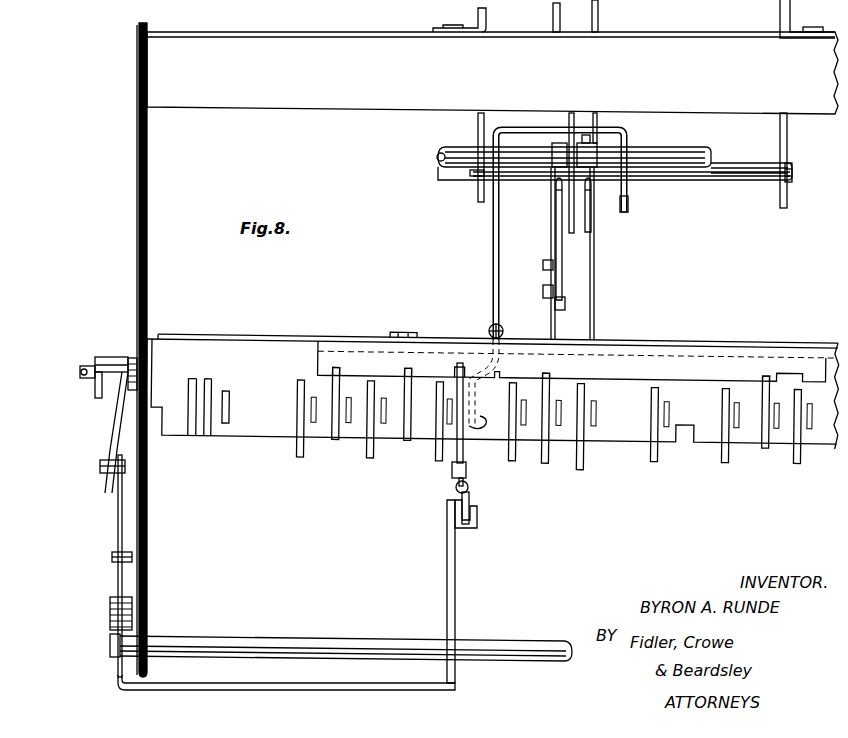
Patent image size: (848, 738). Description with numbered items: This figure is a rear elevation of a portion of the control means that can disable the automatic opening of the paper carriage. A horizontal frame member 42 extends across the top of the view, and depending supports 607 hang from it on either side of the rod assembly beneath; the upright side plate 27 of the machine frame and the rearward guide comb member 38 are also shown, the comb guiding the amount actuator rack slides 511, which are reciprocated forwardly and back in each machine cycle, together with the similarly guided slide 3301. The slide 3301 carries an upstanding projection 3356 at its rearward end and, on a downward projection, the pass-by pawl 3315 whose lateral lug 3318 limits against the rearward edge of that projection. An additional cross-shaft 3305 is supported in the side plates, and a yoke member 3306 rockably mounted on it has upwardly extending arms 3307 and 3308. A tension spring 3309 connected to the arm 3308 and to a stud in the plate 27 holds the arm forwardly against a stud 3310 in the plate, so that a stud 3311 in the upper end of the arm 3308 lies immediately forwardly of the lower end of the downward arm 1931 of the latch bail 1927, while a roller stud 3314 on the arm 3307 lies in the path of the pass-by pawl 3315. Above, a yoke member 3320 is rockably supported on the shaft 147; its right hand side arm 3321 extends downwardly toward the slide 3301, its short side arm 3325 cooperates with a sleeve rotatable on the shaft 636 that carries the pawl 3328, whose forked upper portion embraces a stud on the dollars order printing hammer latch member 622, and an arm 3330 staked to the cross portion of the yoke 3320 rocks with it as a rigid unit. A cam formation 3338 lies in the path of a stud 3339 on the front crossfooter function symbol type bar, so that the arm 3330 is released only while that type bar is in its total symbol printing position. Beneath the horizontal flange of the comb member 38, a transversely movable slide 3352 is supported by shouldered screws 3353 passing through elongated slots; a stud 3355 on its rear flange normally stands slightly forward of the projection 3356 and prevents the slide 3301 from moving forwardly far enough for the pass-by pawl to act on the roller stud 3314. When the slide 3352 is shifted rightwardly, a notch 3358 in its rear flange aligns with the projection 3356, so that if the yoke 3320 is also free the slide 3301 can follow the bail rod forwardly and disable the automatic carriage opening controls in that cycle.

The beam 42 is at (248, 74).
The side plate 27 is at (148, 137).
The yoke member 3320 is at (522, 128).
The right hand side arm 3321 is at (493, 266).
The hanger 607 is at (478, 132).
The dollars order printing hammer latch member 622 is at (628, 127).
The shaft 636 is at (756, 172).
The shaft 147 is at (437, 158).
The side arm 3325 is at (628, 212).
The pawl 3328 is at (594, 226).
The arm 3330 is at (574, 234).
The cam formation 3338 is at (556, 236).
The stud 3339 is at (566, 303).
The slide 3352 is at (647, 358).
The shouldered screws 3353 is at (397, 330).
The stud 3355 is at (458, 362).
The guide comb member 38 is at (252, 352).
The amount actuator rack slide 511 is at (348, 473).
The upstanding projection 3356 is at (453, 369).
The notch 3358 is at (522, 376).
The slide 3301 is at (465, 445).
The lateral lug 3318 is at (452, 471).
The pass-by pawl 3315 is at (472, 502).
The roller stud 3314 is at (470, 529).
The arm 3307 is at (455, 581).
The yoke member 3306 is at (272, 689).
The arm 3308 is at (122, 506).
The stud 3310 is at (125, 554).
The tension spring 3309 is at (128, 607).
The cross-shaft 3305 is at (228, 638).
The latch bail 1927 is at (110, 357).
The downward arm 1931 is at (110, 430).
The stud 3311 is at (125, 467).